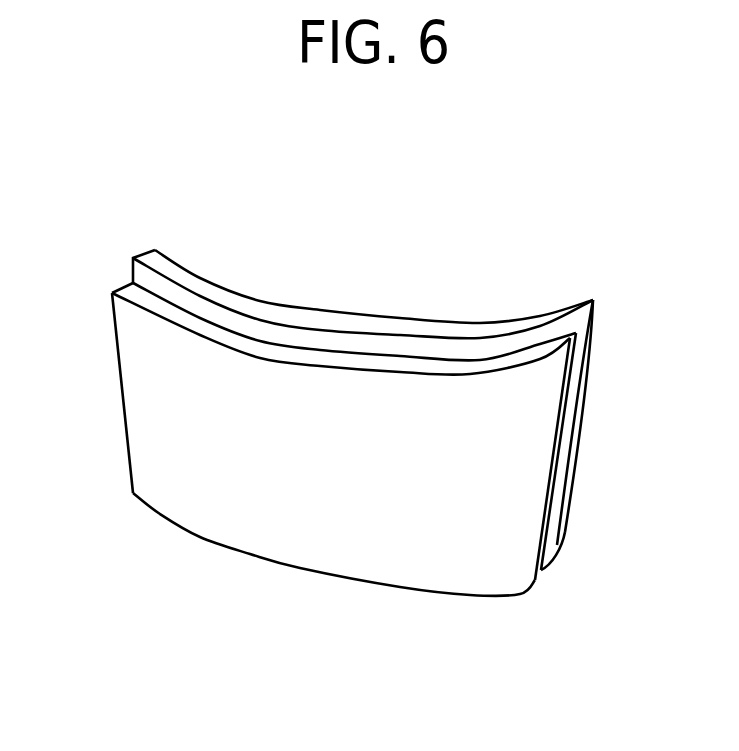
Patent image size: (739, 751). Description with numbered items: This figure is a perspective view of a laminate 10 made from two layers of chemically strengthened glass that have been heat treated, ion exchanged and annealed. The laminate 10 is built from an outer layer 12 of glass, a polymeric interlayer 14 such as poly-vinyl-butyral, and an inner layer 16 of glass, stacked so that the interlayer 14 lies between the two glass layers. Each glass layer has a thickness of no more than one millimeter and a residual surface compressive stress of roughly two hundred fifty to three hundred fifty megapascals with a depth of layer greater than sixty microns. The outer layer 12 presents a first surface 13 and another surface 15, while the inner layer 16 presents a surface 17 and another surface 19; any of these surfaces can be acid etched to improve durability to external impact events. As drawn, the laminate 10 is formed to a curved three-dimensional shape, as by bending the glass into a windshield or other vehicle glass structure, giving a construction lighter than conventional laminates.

The laminate 10 is at (262, 630).
The outer layer 12 is at (545, 565).
The first surface 13 is at (117, 347).
The polymeric interlayer 14 is at (185, 308).
The first surface 15 is at (272, 338).
The inner layer 16 is at (155, 262).
The surface 17 is at (572, 303).
The surface 19 is at (422, 320).